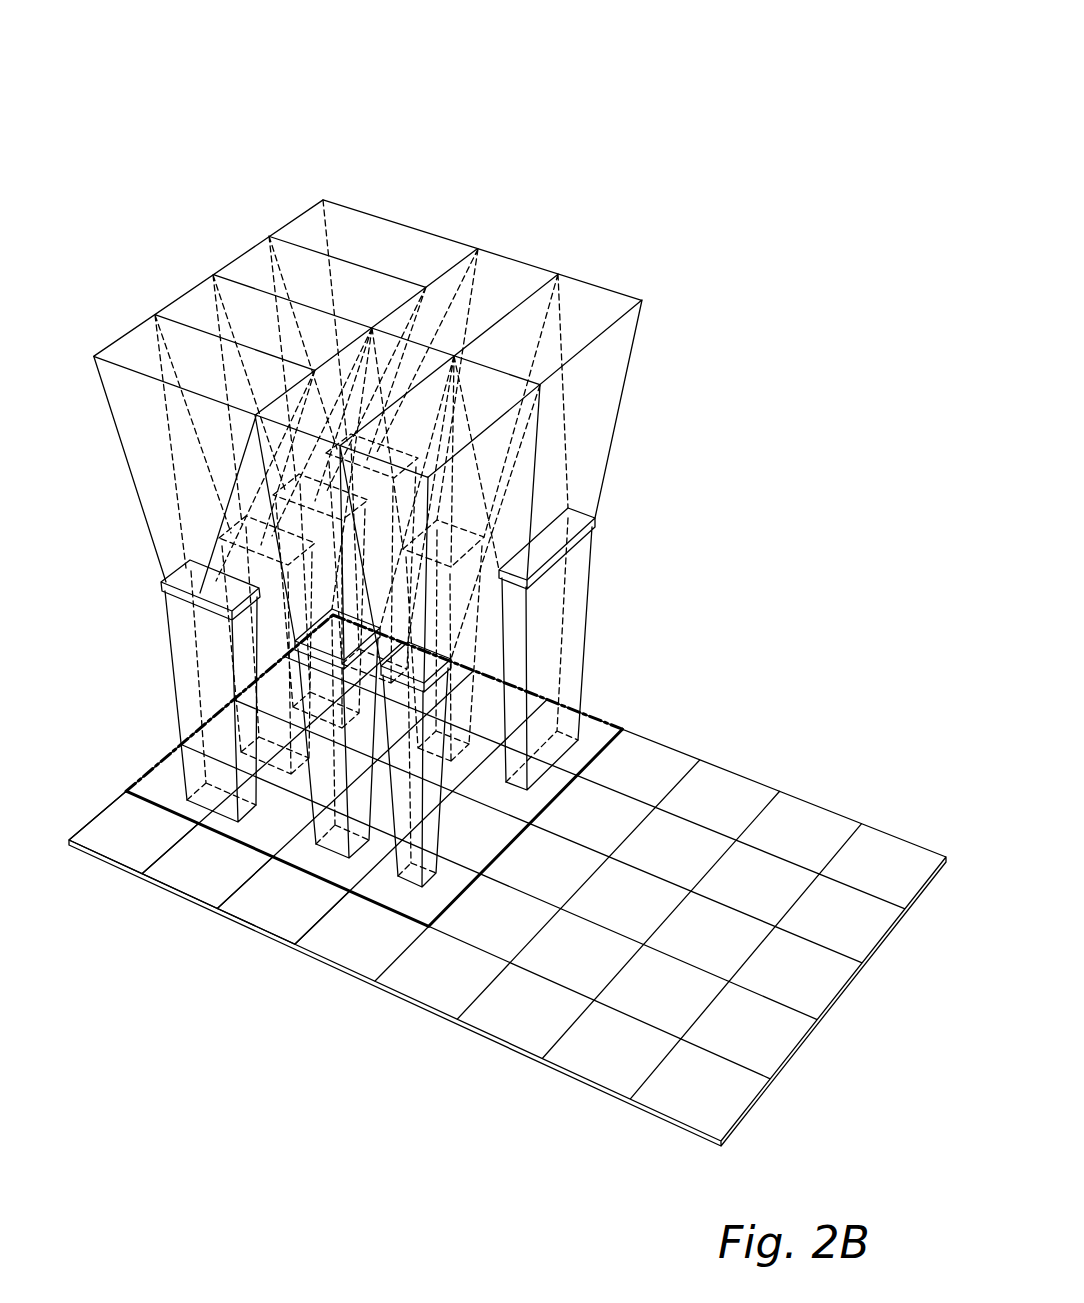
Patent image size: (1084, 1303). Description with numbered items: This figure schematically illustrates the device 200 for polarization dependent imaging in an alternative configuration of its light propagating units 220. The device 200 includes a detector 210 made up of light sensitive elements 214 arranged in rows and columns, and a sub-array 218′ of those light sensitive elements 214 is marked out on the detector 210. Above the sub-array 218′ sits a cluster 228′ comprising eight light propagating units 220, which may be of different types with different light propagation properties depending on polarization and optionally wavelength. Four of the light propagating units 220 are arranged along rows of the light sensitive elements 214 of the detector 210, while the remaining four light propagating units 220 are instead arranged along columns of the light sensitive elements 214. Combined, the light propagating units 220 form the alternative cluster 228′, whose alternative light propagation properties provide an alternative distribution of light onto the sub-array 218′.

The device for polarization dependent imaging 200 is at (755, 82).
The detector 210 is at (72, 838).
The light sensitive elements 214 is at (281, 917).
The sub-array 218′ is at (157, 803).
The light propagating units 220 is at (592, 302).
The cluster 228′ is at (645, 148).